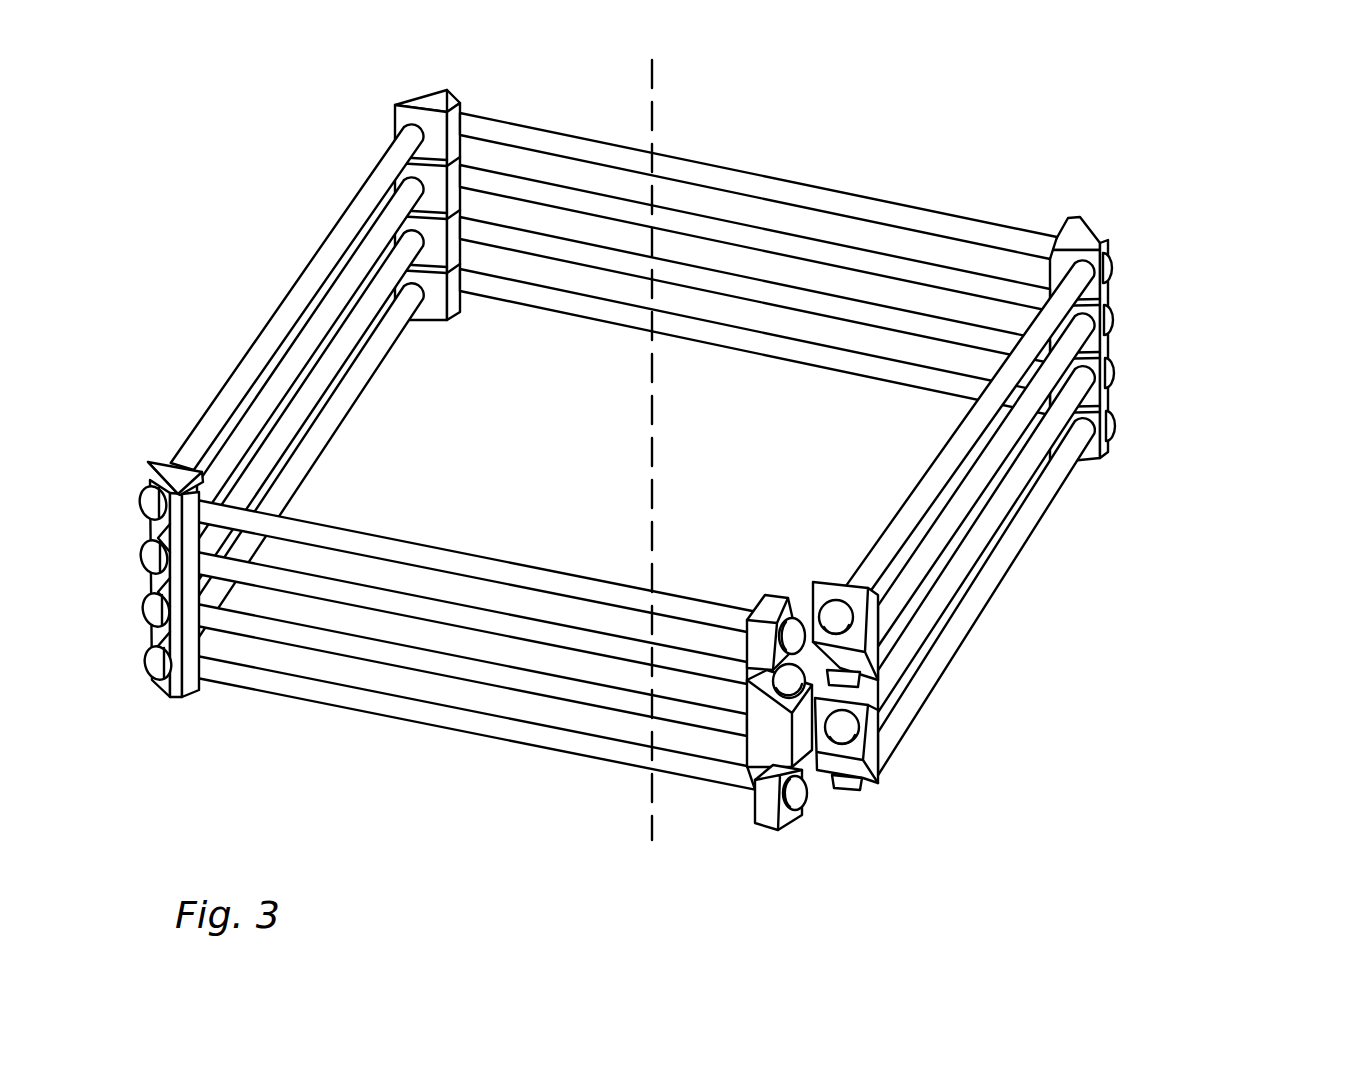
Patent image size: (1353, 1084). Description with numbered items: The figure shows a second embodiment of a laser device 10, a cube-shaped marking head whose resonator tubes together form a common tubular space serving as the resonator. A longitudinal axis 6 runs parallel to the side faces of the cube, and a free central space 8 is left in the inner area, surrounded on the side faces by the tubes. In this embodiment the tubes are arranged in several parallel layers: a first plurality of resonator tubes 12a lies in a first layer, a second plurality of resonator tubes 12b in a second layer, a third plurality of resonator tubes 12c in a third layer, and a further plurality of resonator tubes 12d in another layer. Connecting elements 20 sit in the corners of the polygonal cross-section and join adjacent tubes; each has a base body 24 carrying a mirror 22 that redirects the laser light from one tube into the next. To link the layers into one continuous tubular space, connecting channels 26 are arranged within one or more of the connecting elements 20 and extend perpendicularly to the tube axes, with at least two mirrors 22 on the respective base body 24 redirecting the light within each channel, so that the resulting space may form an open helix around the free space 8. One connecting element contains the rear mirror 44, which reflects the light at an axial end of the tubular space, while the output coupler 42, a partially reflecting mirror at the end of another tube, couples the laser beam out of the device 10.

The longitudinal axis 6 is at (655, 117).
The free central space 8 is at (705, 469).
The laser device 10 is at (1163, 483).
The first plurality of resonator tubes 12a is at (325, 443).
The second plurality of resonator tubes 12b is at (325, 382).
The third plurality of resonator tubes 12c is at (756, 235).
The fourth plurality of resonator tubes 12d is at (885, 215).
The connecting element 20 is at (643, 456).
The mirror 22 is at (1115, 250).
The base body 24 is at (1076, 238).
The connecting channel 26 is at (513, 682).
The output coupler 42 is at (795, 645).
The rear mirror 44 is at (795, 802).